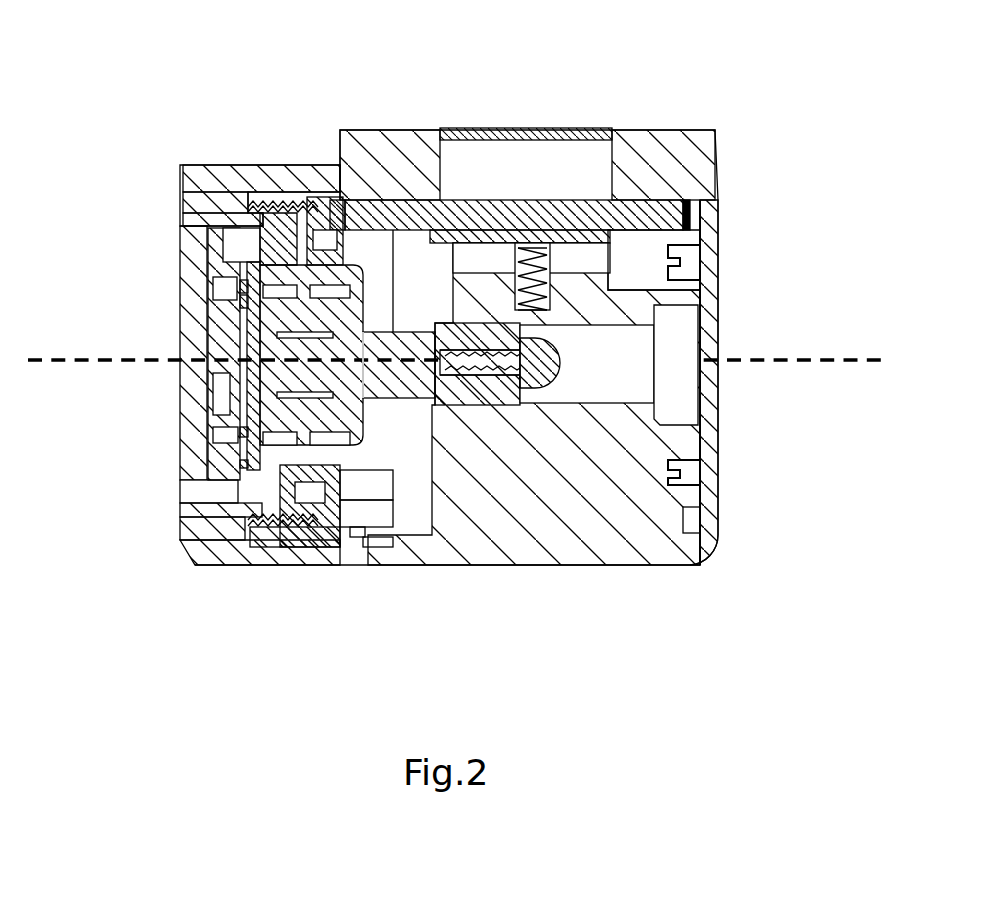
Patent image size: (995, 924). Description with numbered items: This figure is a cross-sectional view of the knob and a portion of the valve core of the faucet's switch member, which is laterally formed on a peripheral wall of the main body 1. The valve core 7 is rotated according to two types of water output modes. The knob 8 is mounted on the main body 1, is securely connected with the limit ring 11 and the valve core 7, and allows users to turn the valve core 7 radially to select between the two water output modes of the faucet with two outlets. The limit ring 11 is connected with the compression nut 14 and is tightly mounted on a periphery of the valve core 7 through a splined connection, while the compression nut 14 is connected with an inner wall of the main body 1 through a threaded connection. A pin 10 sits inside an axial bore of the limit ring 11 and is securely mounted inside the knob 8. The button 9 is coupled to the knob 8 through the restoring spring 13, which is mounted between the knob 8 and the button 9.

The main body 1 is at (190, 170).
The valve core 7 is at (372, 330).
The knob 8 is at (692, 130).
The button 9 is at (502, 128).
The pin 10 is at (387, 203).
The limit ring 11 is at (330, 222).
The restoring spring 13 is at (545, 262).
The compression nut 14 is at (290, 225).